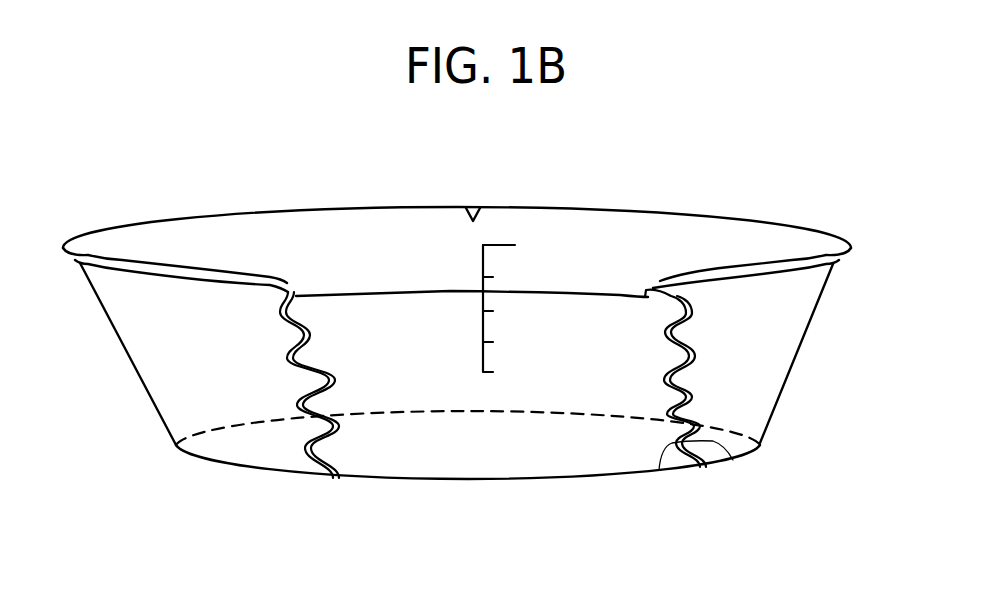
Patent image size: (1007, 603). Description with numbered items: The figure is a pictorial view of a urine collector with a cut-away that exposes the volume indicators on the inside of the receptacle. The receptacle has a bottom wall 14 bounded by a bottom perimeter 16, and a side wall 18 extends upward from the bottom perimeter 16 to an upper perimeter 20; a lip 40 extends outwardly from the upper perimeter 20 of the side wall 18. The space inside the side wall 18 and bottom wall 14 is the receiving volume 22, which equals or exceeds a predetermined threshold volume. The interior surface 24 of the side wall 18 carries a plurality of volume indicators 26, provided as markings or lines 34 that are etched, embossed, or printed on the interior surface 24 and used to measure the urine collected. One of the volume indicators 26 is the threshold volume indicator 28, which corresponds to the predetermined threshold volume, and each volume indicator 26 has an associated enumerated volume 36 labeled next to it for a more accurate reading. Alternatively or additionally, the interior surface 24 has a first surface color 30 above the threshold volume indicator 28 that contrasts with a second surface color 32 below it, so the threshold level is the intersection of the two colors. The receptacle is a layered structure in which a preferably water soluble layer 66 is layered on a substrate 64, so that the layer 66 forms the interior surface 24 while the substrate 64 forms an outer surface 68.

The bottom wall 14 is at (476, 462).
The bottom perimeter 16 is at (242, 445).
The side wall 18 is at (130, 365).
The upper perimeter 20 is at (238, 212).
The receiving volume 22 is at (174, 238).
The interior surface 24 is at (332, 338).
The volume indicators 26 is at (512, 238).
The threshold volume indicator 28 is at (608, 293).
The first surface color 30 is at (655, 224).
The second surface color 32 is at (640, 397).
The markings or lines 34 is at (495, 242).
The enumerated volume 36 is at (473, 208).
The lip 40 is at (855, 257).
The substrate 64 is at (733, 460).
The layer 66 is at (659, 470).
The outer surface 68 is at (293, 458).